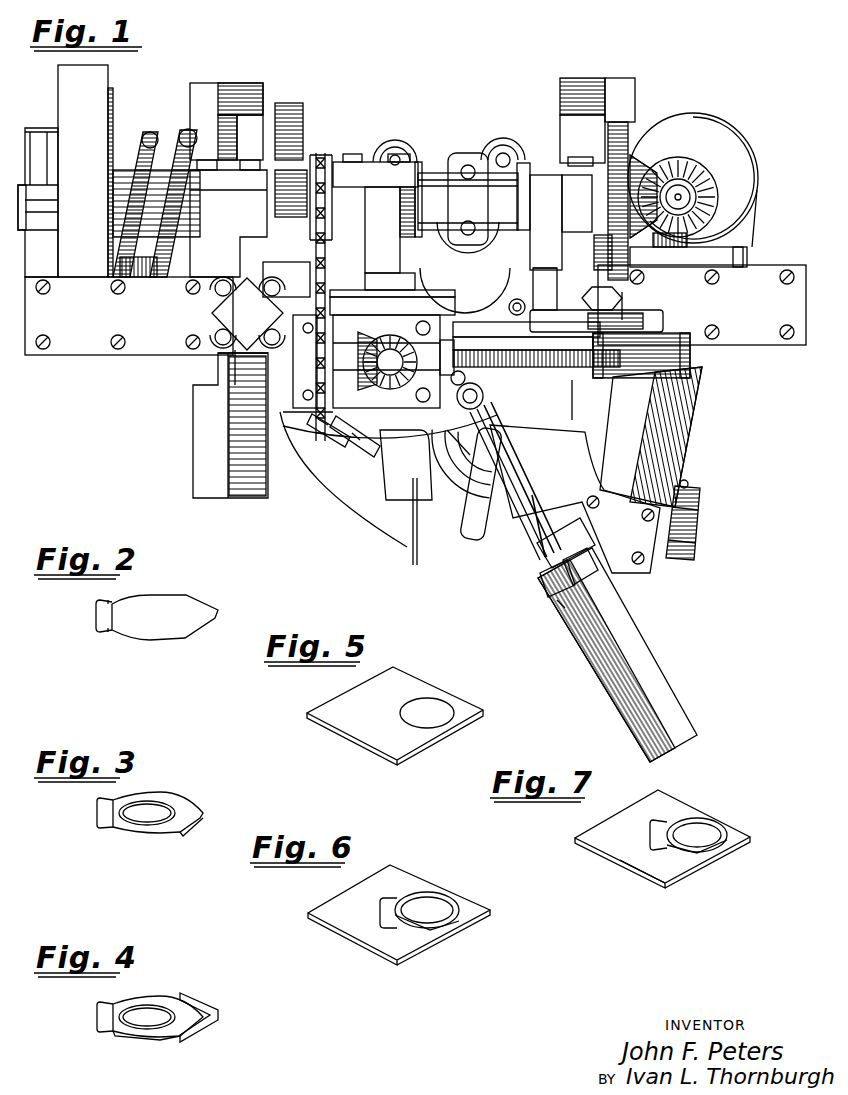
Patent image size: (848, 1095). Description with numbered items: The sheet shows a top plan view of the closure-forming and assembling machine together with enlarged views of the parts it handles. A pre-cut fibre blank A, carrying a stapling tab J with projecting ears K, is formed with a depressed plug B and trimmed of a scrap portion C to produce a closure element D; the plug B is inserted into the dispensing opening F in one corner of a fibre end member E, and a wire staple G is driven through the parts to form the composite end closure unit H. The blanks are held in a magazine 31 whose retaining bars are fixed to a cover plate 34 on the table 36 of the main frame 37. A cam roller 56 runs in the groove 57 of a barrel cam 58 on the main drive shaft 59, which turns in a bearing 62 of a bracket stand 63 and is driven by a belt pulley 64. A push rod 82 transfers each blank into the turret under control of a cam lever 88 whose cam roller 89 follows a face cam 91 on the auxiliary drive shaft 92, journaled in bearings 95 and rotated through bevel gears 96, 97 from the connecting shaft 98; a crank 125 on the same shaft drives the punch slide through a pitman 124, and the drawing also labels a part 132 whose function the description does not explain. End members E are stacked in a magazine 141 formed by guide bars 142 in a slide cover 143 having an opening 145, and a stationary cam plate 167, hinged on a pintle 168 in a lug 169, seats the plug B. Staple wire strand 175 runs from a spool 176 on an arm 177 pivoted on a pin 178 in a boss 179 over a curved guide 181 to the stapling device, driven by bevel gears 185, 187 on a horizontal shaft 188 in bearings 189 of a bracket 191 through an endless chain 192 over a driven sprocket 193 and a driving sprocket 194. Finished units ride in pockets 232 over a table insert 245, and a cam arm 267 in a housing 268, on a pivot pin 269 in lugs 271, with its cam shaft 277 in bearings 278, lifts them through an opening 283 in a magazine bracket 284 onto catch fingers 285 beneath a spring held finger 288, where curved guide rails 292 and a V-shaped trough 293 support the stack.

In FIG. 1, the magazine 31 is at (636, 303).
In FIG. 1, the cover plate 34 is at (758, 322).
In FIG. 1, the table 36 is at (390, 492).
In FIG. 1, the frame 37 is at (233, 92).
In FIG. 1, the cam roller 56 is at (143, 265).
In FIG. 1, the groove 57 is at (170, 132).
In FIG. 1, the barrel cam 58 is at (148, 148).
In FIG. 1, the drive shaft 59 is at (25, 200).
In FIG. 1, the bearing 62 is at (40, 206).
In FIG. 1, the bracket stand 63 is at (45, 130).
In FIG. 1, the belt pulley 64 is at (110, 90).
In FIG. 1, the push rod 82 is at (517, 307).
In FIG. 1, the cam lever 88 is at (603, 273).
In FIG. 1, the cam roller 89 is at (620, 160).
In FIG. 1, the face cam 91 is at (618, 120).
In FIG. 1, the auxiliary drive shaft 92 is at (290, 185).
In FIG. 1, the bearings 95 is at (370, 175).
In FIG. 1, the bevel gear 96 is at (640, 168).
In FIG. 1, the bevel gear 97 is at (715, 185).
In FIG. 1, the connecting shaft 98 is at (690, 197).
In FIG. 1, the pitman 124 is at (456, 165).
In FIG. 1, the crank 125 is at (431, 185).
In FIG. 1, the eccentric 132 is at (396, 142).
In FIG. 1, the magazine 141 is at (202, 321).
In FIG. 1, the guide bars 142 is at (220, 352).
In FIG. 1, the slide cover 143 is at (142, 333).
In FIG. 1, the opening 145 is at (238, 388).
In FIG. 1, the cam plate 167 is at (380, 440).
In FIG. 1, the pintle 168 is at (400, 500).
In FIG. 1, the lug 169 is at (330, 430).
In FIG. 1, the strand 175 is at (575, 380).
In FIG. 1, the spool 176 is at (660, 380).
In FIG. 1, the arm 177 is at (640, 326).
In FIG. 1, the pivot pin 178 is at (545, 285).
In FIG. 1, the boss 179 is at (540, 235).
In FIG. 1, the curved guide 181 is at (475, 355).
In FIG. 1, the bevel gear 185 is at (398, 345).
In FIG. 1, the bevel gear 187 is at (370, 340).
In FIG. 1, the horizontal shaft 188 is at (405, 383).
In FIG. 1, the bearings 189 is at (298, 373).
In FIG. 1, the bracket 191 is at (352, 440).
In FIG. 1, the endless chain 192 is at (312, 283).
In FIG. 1, the driven sprocket 193 is at (328, 420).
In FIG. 1, the driving sprocket 194 is at (318, 155).
In FIG. 1, the pockets 232 is at (415, 505).
In FIG. 1, the table insert 245 is at (432, 470).
In FIG. 1, the cam arm 267 is at (696, 516).
In FIG. 1, the housing 268 is at (665, 428).
In FIG. 1, the pivot pin 269 is at (690, 485).
In FIG. 1, the lugs 271 is at (700, 498).
In FIG. 1, the cam shaft 277 is at (557, 605).
In FIG. 1, the bearings 278 is at (612, 568).
In FIG. 1, the opening 283 is at (500, 448).
In FIG. 1, the magazine bracket 284 is at (505, 530).
In FIG. 1, the catch fingers 285 is at (585, 480).
In FIG. 1, the spring held finger 288 is at (480, 470).
In FIG. 1, the curved guide rails 292 is at (518, 550).
In FIG. 1, the V-shaped trough 293 is at (630, 655).
In FIG. 2, the blank A is at (185, 612).
In FIG. 3, the blank A is at (185, 812).
In FIG. 4, the blank A is at (190, 1002).
In FIG. 3, the plug B is at (150, 805).
In FIG. 4, the plug B is at (152, 1000).
In FIG. 6, the plug B is at (437, 905).
In FIG. 7, the plug B is at (702, 830).
In FIG. 4, the scrap portion C is at (212, 1020).
In FIG. 4, the closure element D is at (163, 1048).
In FIG. 6, the closure element D is at (455, 908).
In FIG. 7, the closure element D is at (725, 832).
In FIG. 5, the end member E is at (410, 688).
In FIG. 6, the end member E is at (400, 880).
In FIG. 7, the end member E is at (672, 808).
In FIG. 5, the dispensing opening F is at (454, 704).
In FIG. 7, the wire staple G is at (652, 838).
In FIG. 7, the end closure unit H is at (641, 890).
In FIG. 2, the stapling tab J is at (98, 618).
In FIG. 2, the ears K is at (108, 604).